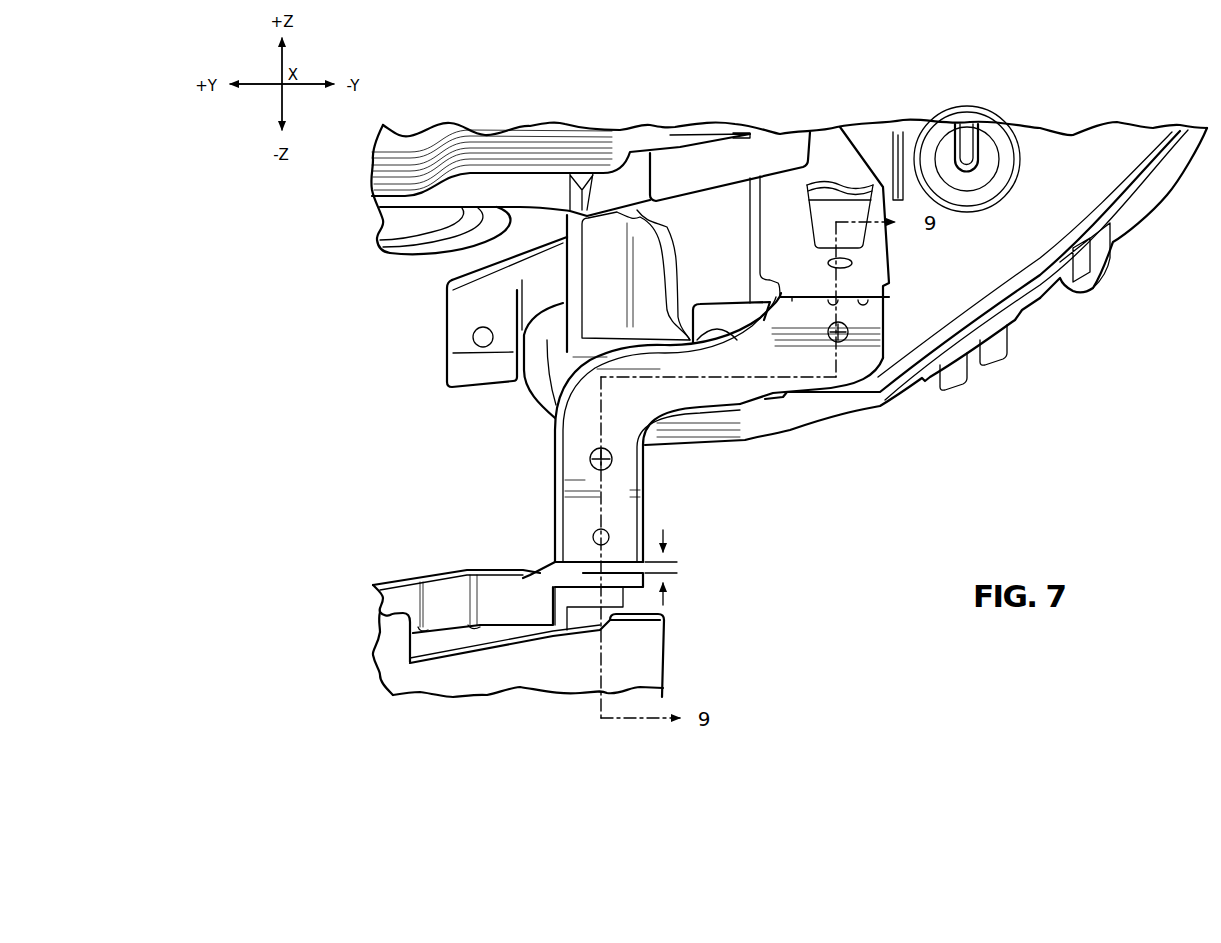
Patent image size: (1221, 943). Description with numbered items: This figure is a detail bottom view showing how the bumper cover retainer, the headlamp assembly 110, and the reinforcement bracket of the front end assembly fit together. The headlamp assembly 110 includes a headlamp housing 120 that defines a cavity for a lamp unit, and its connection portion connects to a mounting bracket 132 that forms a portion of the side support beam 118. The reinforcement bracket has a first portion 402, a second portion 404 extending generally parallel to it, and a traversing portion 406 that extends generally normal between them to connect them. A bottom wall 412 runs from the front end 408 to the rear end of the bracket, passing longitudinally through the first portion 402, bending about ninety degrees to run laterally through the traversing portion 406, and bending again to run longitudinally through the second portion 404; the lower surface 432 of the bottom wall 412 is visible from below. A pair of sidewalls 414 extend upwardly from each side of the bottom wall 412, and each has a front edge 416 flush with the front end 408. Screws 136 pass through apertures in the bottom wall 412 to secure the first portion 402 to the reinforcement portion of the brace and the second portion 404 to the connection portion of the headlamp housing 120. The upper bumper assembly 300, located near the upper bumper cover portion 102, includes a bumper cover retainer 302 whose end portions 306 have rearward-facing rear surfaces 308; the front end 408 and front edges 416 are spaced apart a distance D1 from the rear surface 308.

The headlamp assembly 110 is at (512, 103).
The side support beam 118 is at (783, 147).
The mounting bracket 132 is at (873, 250).
The screw 136 is at (848, 332).
The headlamp housing 120 is at (938, 305).
The second portion 404 is at (873, 392).
The traversing portion 406 is at (748, 442).
The first portion 402 is at (694, 512).
The bottom wall 412 is at (587, 417).
The sidewalls 414 is at (555, 478).
The front edge 416 is at (555, 548).
The lower surface 432 is at (689, 398).
The front end 408 is at (578, 568).
The rear surface 308 is at (540, 573).
The end portion 306 is at (592, 580).
The bumper cover retainer 302 is at (465, 569).
The upper bumper assembly 300 is at (347, 618).
The upper bumper cover portion 102 is at (650, 660).
The distance D1 is at (664, 535).